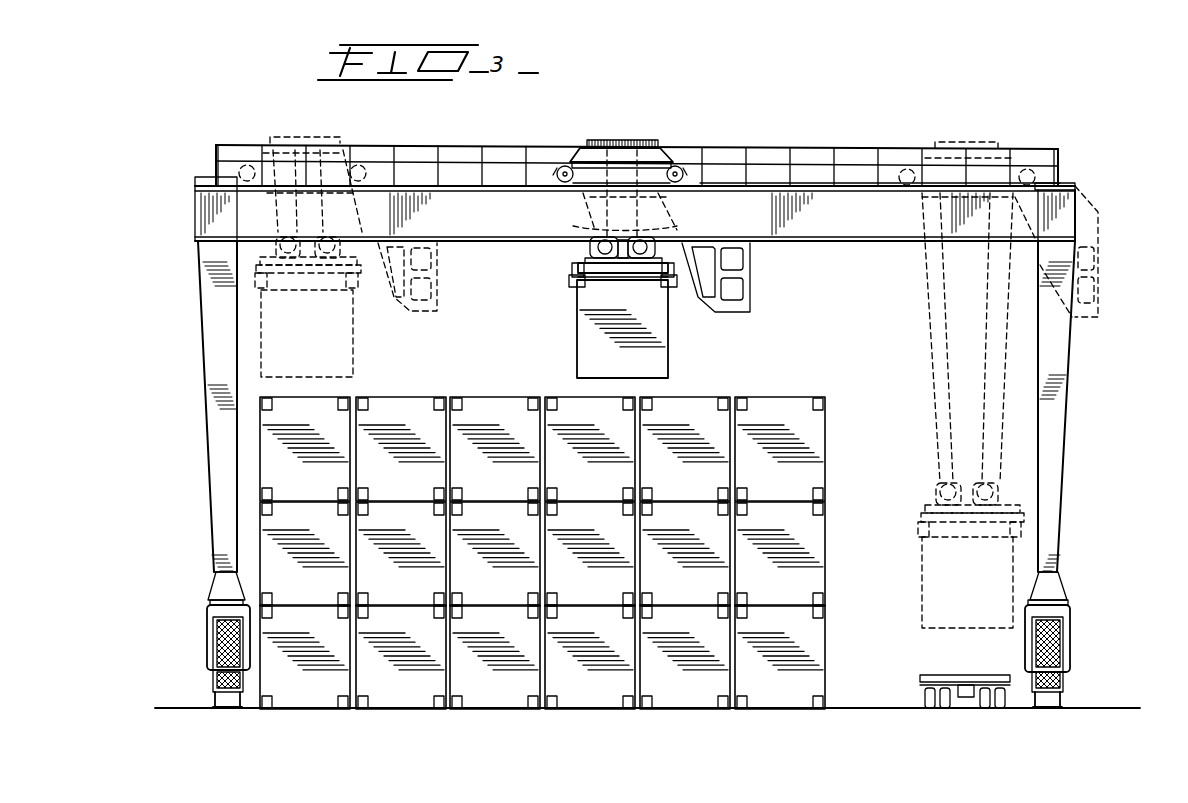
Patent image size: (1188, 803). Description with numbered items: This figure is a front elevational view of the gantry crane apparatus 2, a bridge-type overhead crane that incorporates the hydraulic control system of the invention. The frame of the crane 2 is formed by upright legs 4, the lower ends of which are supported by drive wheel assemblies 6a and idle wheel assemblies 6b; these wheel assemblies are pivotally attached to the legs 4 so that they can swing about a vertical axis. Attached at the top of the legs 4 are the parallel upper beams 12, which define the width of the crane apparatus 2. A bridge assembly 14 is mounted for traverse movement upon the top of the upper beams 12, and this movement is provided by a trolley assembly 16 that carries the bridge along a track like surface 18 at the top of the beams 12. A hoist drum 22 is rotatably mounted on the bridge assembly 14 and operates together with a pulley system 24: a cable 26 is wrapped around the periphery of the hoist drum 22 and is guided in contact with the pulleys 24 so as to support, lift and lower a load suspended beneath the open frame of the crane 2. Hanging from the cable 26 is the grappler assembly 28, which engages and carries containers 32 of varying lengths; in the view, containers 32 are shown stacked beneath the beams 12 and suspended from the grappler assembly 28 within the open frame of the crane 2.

The gantry crane apparatus 2 is at (714, 137).
The upright legs 4 is at (212, 358).
The drive wheel assemblies 6a is at (1063, 702).
The idle wheel assemblies 6b is at (214, 703).
The upper beams 12 is at (824, 220).
The bridge assembly 14 is at (600, 140).
The trolley assembly 16 is at (677, 175).
The track like surface 18 is at (853, 182).
The hoist drum 22 is at (636, 142).
The pulley system 24 is at (560, 222).
The cable 26 is at (590, 212).
The grappler assembly 28 is at (263, 262).
The containers 32 is at (333, 307).